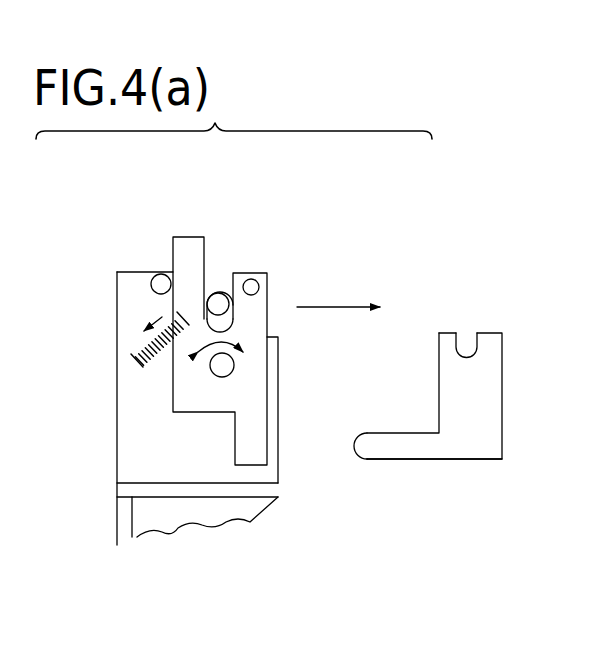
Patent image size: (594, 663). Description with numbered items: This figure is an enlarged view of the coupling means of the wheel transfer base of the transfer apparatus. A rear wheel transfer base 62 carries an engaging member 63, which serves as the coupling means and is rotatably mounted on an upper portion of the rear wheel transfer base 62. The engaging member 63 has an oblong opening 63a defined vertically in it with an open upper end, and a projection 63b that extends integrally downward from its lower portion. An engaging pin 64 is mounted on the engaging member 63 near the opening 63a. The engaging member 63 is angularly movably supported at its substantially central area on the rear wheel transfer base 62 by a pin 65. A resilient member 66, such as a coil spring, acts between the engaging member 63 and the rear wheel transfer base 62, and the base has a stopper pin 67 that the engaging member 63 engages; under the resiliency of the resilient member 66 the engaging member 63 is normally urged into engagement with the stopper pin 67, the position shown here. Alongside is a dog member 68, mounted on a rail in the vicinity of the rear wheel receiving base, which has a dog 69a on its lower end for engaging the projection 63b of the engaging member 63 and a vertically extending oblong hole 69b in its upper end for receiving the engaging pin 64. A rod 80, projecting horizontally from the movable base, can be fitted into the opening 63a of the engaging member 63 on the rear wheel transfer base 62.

The rear wheel transfer base 62 is at (121, 517).
The engaging member 63 is at (200, 309).
The oblong opening 63a is at (227, 290).
The projection 63b is at (263, 457).
The engaging pin 64 is at (259, 286).
The pin 65 is at (213, 368).
The resilient member 66 is at (143, 355).
The stopper pin 67 is at (167, 277).
The dog member 68 is at (468, 385).
The dog 69a is at (420, 450).
The oblong hole 69b is at (472, 332).
The rod 80 is at (218, 293).